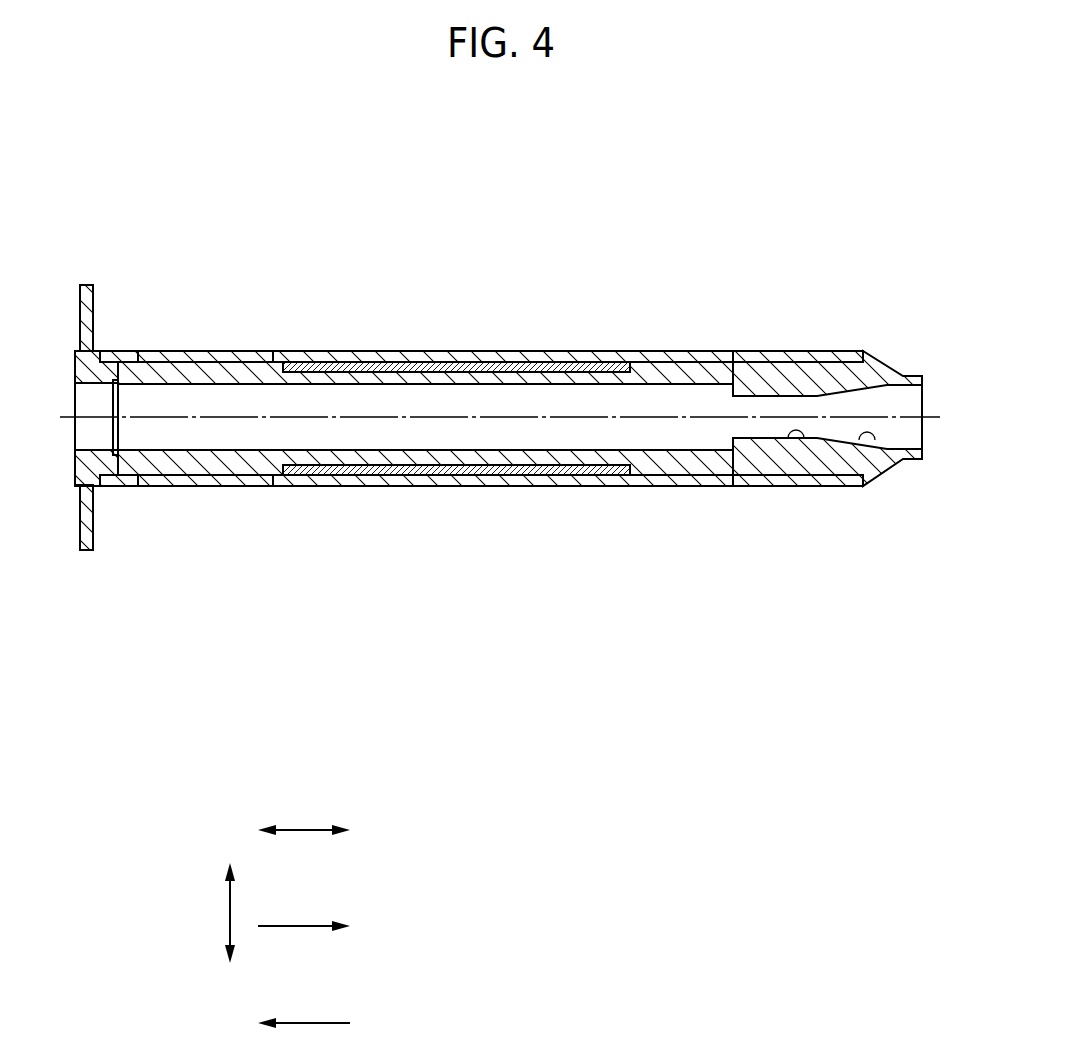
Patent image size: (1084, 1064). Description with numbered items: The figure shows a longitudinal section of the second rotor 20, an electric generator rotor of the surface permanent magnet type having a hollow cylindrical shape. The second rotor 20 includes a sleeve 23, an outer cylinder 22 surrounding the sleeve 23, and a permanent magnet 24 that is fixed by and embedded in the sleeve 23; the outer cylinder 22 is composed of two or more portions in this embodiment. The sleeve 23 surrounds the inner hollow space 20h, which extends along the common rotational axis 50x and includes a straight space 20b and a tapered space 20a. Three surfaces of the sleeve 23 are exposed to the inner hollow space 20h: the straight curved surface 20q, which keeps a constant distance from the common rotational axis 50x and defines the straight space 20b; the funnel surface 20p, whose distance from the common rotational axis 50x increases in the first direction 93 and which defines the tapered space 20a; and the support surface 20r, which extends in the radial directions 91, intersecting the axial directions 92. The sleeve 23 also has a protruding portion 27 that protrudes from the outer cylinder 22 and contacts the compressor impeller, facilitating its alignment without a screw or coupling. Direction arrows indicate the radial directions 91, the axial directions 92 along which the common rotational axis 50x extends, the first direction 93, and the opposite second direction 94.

The second rotor 20 is at (183, 237).
The tapered space 20a is at (846, 396).
The straight space 20b is at (768, 396).
The inner hollow space 20h is at (347, 395).
The funnel surface 20p is at (875, 440).
The straight curved surface 20q is at (804, 438).
The support surface 20r is at (733, 440).
The outer cylinder 22 is at (110, 486).
The sleeve 23 is at (233, 372).
The permanent magnet 24 is at (562, 357).
The protruding portion 27 is at (914, 376).
The common rotational axis 50x is at (432, 417).
The radial directions 91 is at (228, 908).
The axial directions 92 is at (310, 827).
The first direction 93 is at (310, 922).
The second direction 94 is at (310, 1018).